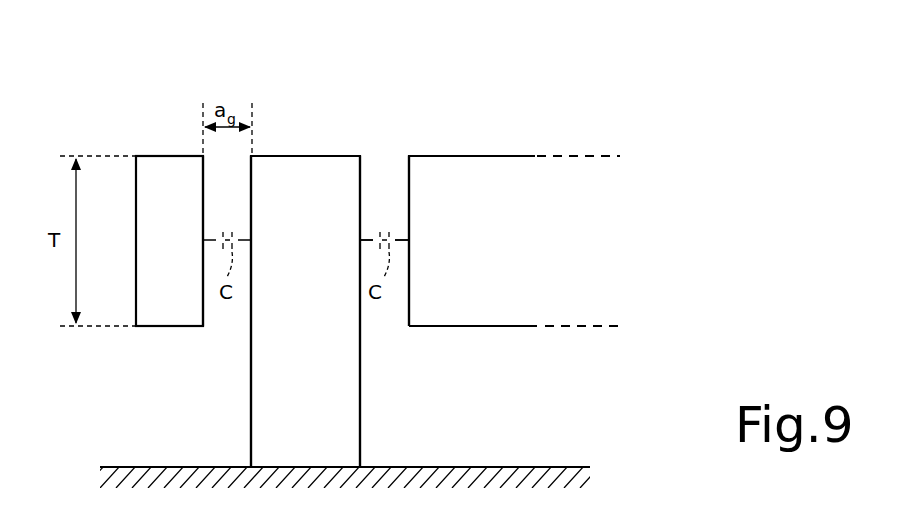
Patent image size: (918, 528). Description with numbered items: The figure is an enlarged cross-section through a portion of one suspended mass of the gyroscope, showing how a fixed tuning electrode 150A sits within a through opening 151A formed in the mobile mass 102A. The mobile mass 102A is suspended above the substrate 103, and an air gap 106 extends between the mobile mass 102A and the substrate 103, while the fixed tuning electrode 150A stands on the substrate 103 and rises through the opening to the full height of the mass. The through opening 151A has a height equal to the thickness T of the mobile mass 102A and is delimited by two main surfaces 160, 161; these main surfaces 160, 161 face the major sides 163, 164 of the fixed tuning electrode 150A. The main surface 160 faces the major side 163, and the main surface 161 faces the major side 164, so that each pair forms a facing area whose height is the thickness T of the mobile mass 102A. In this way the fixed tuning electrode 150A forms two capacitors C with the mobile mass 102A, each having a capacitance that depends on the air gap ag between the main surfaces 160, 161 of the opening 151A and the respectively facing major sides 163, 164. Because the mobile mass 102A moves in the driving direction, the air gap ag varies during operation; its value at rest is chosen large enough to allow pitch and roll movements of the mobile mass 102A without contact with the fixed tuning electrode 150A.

The air gap 106 is at (212, 166).
The fixed tuning electrode 150A is at (300, 167).
The through opening 151A is at (389, 154).
The major side of fixed tuning electrode 164 is at (365, 167).
The major side of fixed tuning electrode 163 is at (249, 429).
The main surface of opening 160 is at (208, 314).
The main surface of opening 161 is at (404, 305).
The mobile mass 102A is at (483, 180).
The substrate 103 is at (492, 465).